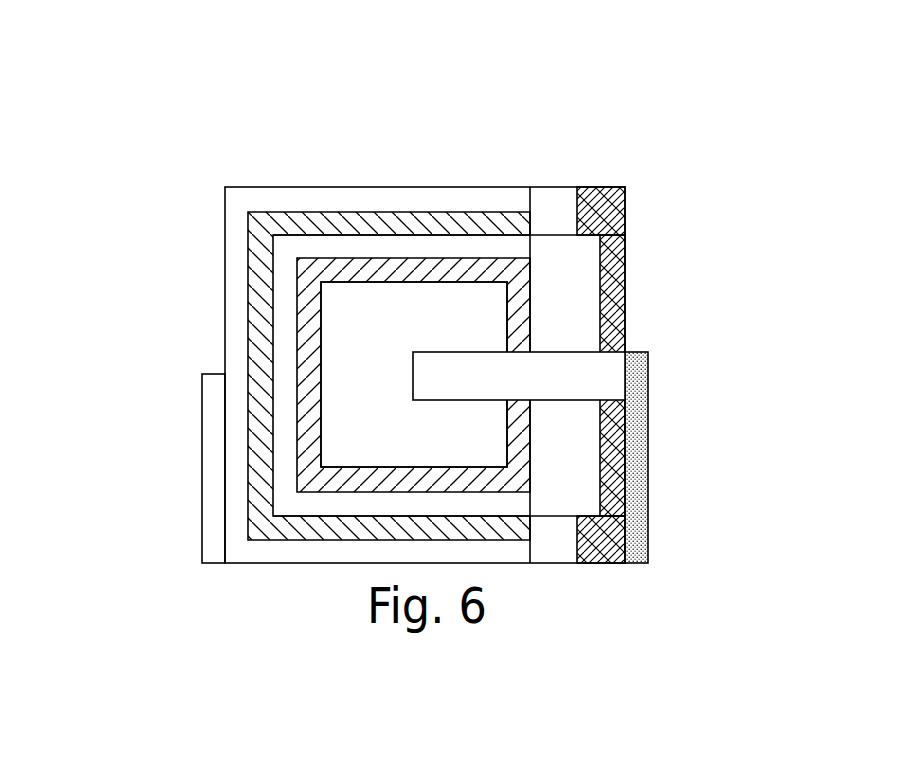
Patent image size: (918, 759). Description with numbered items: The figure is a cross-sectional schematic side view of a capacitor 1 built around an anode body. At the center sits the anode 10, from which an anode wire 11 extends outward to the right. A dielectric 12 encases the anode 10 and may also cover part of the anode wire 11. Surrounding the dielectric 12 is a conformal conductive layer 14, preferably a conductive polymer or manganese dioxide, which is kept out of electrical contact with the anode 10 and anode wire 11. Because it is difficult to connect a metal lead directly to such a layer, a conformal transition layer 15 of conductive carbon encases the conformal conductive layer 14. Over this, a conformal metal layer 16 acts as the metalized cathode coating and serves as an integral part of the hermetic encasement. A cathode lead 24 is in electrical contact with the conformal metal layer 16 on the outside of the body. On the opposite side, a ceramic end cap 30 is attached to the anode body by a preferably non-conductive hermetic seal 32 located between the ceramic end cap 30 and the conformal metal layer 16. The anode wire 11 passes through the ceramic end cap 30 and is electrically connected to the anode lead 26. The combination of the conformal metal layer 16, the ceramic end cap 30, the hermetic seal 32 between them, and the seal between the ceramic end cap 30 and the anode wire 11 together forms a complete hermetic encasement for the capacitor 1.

The capacitor 1 is at (414, 324).
The anode 10 is at (462, 303).
The anode wire 11 is at (578, 378).
The dielectric 12 is at (407, 268).
The conformal conductive layer 14 is at (340, 245).
The conformal transition layer 15 is at (265, 223).
The conformal metal layer 16 is at (237, 267).
The cathode lead 24 is at (217, 528).
The anode lead 26 is at (637, 463).
The ceramic end cap 30 is at (613, 293).
The hermetic seal 32 is at (560, 213).